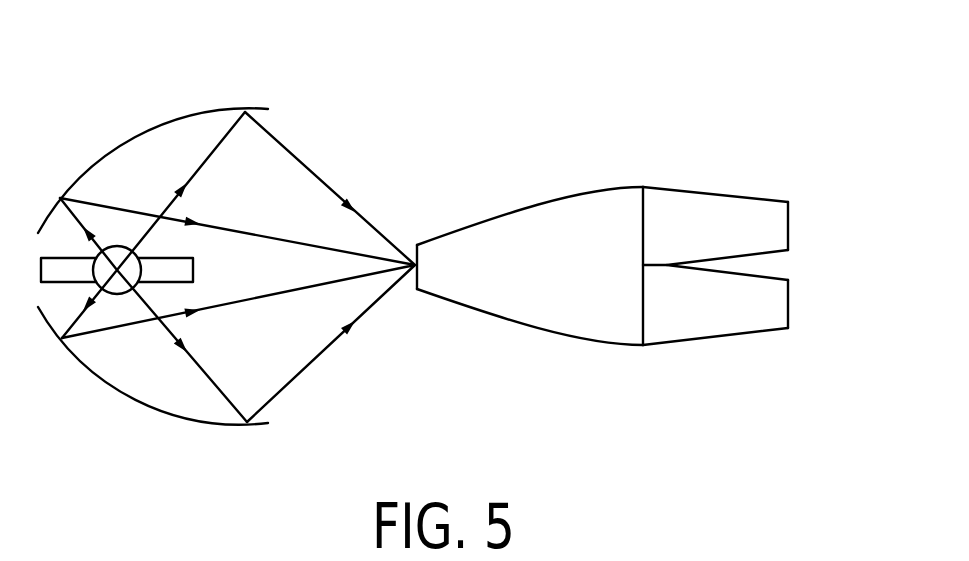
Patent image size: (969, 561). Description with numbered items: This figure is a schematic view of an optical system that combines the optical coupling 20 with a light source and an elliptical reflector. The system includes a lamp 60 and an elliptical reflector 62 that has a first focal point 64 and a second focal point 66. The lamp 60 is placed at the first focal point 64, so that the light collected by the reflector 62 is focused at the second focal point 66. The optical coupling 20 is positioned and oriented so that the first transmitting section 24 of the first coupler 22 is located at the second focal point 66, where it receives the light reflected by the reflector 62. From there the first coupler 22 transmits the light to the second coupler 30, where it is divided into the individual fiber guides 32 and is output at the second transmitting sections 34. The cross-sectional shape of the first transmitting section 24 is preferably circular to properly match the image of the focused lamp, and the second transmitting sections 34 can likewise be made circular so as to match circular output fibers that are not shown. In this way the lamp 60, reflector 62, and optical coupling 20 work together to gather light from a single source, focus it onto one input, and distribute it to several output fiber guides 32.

The optical coupling 20 is at (617, 213).
The first coupler 22 is at (575, 302).
The first transmitting section 24 is at (412, 257).
The second coupler 30 is at (698, 177).
The individual fiber guides 32 is at (743, 223).
The second transmitting sections 34 is at (790, 222).
The lamp 60 is at (115, 304).
The elliptical reflector 62 is at (115, 138).
The first focal point 64 is at (119, 277).
The second focal point 66 is at (412, 273).